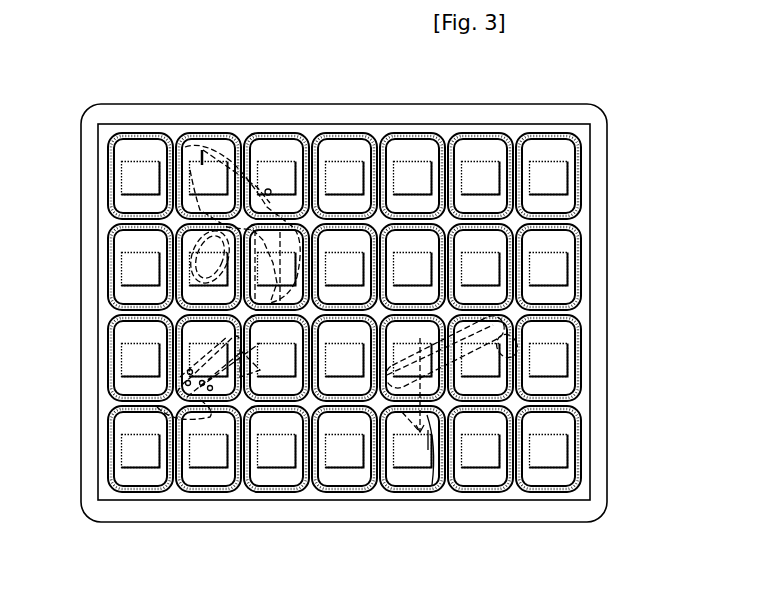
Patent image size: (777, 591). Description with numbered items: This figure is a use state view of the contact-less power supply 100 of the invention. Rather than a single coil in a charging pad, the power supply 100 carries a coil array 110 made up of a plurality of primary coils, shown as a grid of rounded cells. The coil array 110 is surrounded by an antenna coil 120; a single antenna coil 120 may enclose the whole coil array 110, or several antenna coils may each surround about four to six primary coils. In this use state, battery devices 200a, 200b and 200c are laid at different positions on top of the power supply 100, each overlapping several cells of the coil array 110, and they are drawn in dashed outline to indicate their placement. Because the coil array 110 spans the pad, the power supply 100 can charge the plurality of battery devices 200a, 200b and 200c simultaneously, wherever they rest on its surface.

The power supply 100 is at (582, 108).
The coil array 110 is at (578, 195).
The antenna coil 120 is at (591, 147).
The battery device 200a is at (228, 152).
The battery device 200b is at (163, 393).
The battery device 200c is at (428, 420).